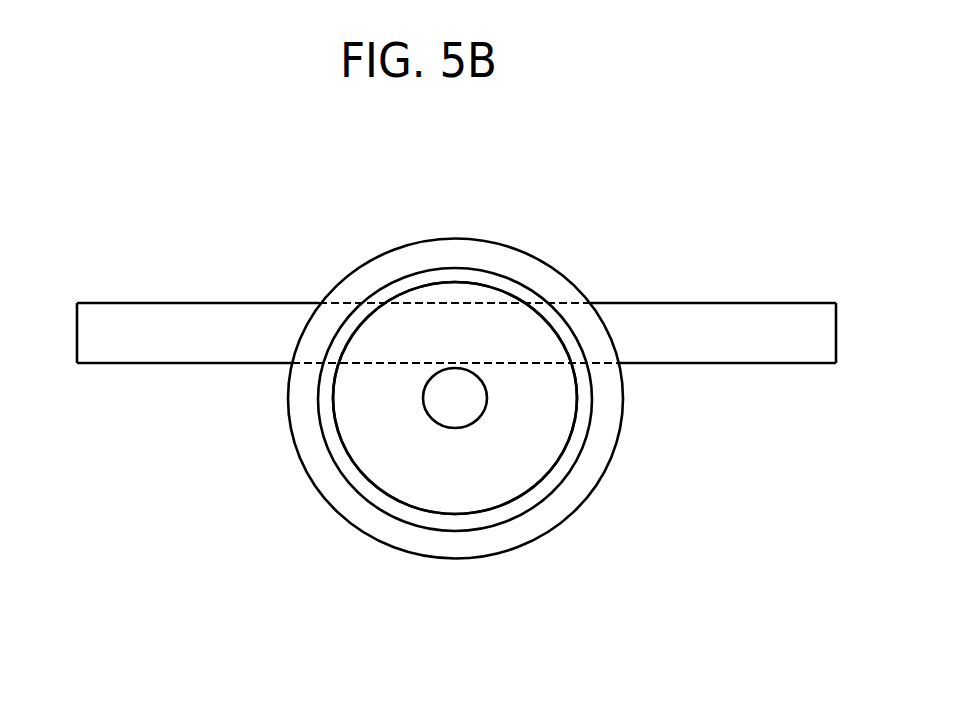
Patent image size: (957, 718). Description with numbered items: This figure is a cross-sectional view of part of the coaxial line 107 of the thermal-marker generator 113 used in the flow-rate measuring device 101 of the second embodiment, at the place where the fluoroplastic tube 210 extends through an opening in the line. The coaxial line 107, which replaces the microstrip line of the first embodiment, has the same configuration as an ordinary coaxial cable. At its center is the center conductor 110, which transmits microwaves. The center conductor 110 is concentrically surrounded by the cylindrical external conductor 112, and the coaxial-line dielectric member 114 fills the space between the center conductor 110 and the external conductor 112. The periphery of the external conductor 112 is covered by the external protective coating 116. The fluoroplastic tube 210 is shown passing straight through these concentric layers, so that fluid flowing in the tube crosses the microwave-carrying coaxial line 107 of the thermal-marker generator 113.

The flow-rate measuring device 101 is at (170, 157).
The thermal-marker generator 113 is at (665, 213).
The coaxial line 107 is at (545, 250).
The external protective coating 116 is at (577, 482).
The external conductor 112 is at (457, 520).
The coaxial-line dielectric member 114 is at (407, 459).
The center conductor 110 is at (437, 397).
The fluoroplastic tube 210 is at (755, 303).